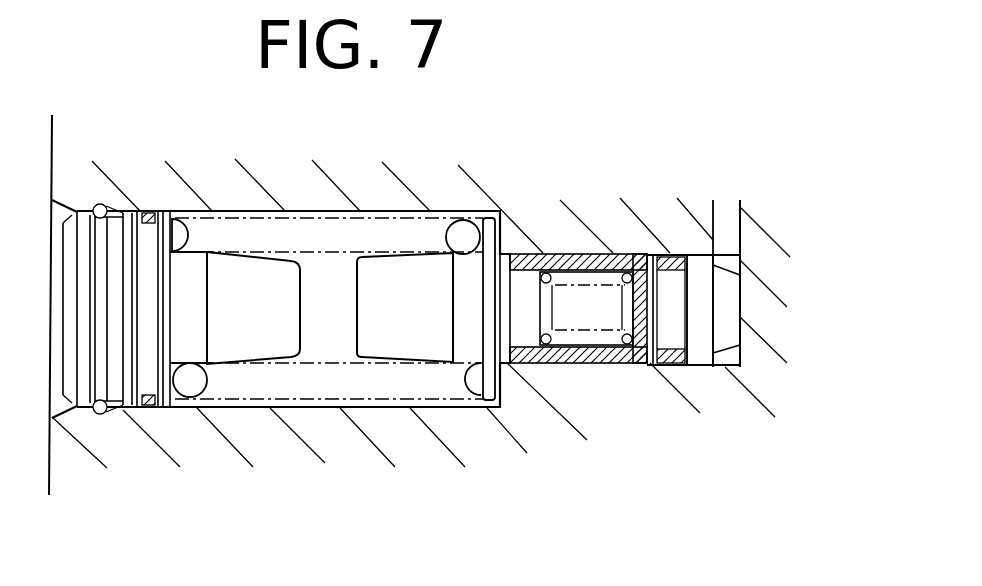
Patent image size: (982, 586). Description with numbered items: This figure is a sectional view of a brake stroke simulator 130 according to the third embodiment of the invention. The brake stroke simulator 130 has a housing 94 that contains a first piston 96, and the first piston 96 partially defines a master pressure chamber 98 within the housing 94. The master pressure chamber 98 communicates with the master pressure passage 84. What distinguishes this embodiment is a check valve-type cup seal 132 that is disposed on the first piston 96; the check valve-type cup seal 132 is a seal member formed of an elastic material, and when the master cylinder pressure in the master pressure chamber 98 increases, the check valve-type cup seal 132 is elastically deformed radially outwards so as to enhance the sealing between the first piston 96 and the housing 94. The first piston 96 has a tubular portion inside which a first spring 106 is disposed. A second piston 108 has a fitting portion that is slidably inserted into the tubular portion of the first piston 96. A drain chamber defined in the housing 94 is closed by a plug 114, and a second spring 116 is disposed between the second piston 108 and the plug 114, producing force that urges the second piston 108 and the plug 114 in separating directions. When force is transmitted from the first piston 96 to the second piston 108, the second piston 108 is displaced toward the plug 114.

The brake stroke simulator 130 is at (426, 180).
The housing 94 is at (560, 240).
The check valve-type cup seal 132 is at (670, 253).
The master pressure passage 84 is at (725, 240).
The master pressure chamber 98 is at (723, 358).
The first piston 96 is at (701, 340).
The first spring 106 is at (585, 365).
The second piston 108 is at (487, 400).
The plug 114 is at (242, 330).
The second spring 116 is at (330, 380).